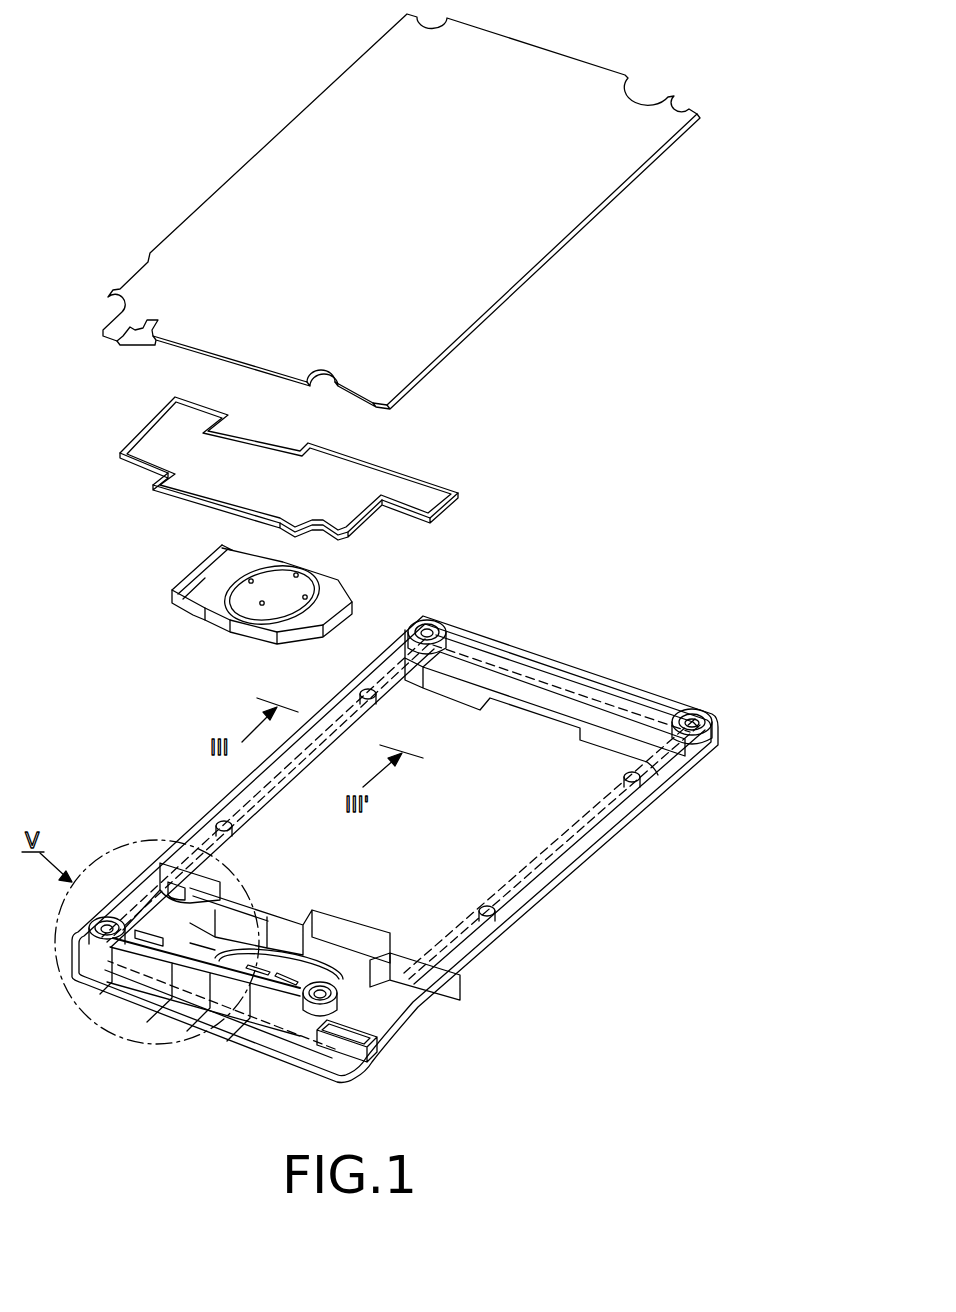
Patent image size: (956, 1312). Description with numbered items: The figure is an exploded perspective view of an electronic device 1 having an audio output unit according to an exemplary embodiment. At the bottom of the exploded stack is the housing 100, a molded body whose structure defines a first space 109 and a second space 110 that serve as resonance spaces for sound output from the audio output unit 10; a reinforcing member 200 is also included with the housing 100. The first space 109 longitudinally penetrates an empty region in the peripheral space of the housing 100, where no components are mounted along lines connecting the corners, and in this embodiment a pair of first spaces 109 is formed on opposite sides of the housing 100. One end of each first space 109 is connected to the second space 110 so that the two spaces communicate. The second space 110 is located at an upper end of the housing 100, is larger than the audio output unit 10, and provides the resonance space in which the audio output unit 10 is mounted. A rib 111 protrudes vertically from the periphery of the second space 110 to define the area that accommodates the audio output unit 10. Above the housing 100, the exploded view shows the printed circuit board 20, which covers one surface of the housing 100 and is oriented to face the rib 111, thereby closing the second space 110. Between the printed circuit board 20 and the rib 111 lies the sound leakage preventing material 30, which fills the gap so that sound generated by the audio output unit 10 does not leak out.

The electronic device 1 is at (137, 46).
The printed circuit board 20 is at (283, 153).
The sound leakage preventing material 30 is at (140, 431).
The audio output unit 10 is at (247, 600).
The housing 100 is at (592, 678).
The reinforcing member 200 is at (545, 853).
The first space 109 is at (186, 842).
The second space 110 is at (402, 985).
The rib 111 is at (463, 922).